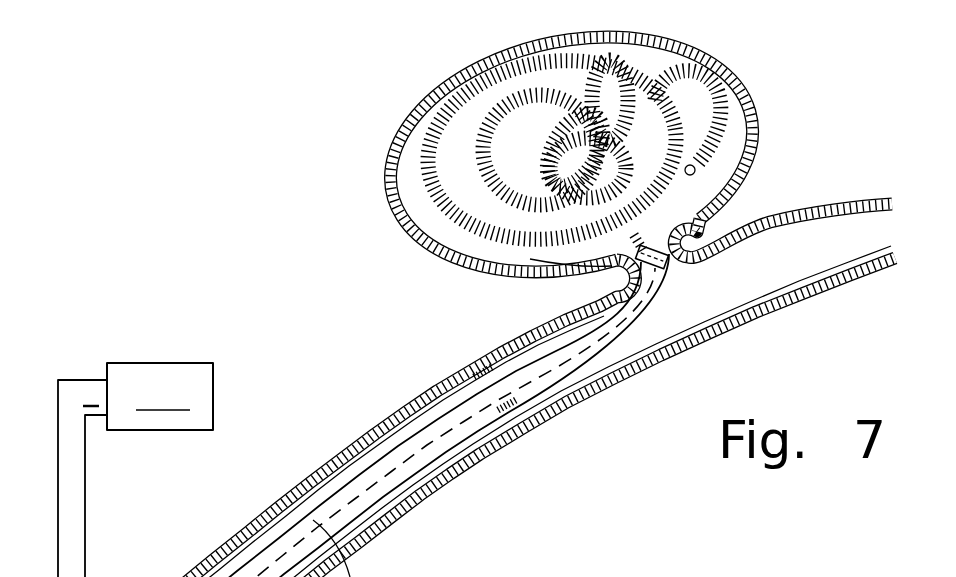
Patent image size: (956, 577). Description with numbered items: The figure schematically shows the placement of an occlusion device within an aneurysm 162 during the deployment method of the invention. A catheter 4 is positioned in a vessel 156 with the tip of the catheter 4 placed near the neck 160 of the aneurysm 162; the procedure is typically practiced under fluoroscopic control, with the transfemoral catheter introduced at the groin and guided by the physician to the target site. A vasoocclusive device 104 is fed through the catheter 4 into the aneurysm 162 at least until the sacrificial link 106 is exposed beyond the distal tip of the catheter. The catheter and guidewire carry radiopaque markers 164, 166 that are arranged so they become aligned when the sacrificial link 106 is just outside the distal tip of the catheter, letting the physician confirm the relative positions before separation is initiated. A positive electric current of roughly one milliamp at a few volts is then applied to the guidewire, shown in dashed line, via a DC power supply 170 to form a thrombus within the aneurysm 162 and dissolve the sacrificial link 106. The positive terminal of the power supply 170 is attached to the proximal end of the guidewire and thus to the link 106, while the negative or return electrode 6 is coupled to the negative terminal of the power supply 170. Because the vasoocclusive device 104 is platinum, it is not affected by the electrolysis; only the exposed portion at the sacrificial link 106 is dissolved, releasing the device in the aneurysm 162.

The catheter 4 is at (452, 452).
The return electrode 6 is at (612, 280).
The vasoocclusive device 104 is at (718, 100).
The sacrificial link 106 is at (550, 265).
The vessel 156 is at (372, 422).
The neck 160 is at (750, 208).
The aneurysm 162 is at (729, 21).
The radiopaque marker 164 is at (512, 410).
The radiopaque marker 166 is at (480, 378).
The DC power supply 170 is at (135, 467).